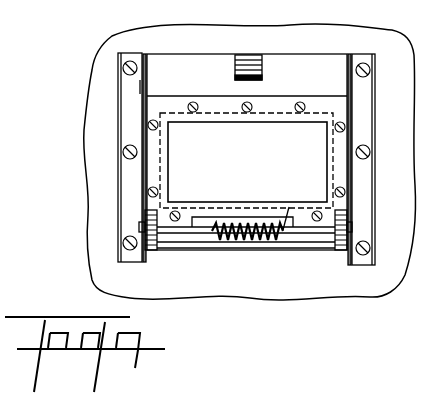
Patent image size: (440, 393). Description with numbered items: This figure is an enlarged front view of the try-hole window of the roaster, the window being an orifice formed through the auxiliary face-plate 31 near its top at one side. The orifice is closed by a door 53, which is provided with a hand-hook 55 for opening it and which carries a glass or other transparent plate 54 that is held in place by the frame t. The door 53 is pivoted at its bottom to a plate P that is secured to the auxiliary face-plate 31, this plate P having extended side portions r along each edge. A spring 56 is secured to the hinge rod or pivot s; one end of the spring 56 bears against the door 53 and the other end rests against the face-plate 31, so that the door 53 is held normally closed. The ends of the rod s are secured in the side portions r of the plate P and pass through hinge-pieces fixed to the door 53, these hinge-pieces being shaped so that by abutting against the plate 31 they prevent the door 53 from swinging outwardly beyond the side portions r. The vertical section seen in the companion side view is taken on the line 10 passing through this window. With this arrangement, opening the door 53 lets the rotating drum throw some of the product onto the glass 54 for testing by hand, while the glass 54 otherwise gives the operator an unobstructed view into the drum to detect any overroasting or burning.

The section line 10 is at (300, 13).
The auxiliary face-plate 31 is at (245, 246).
The door 53 is at (247, 152).
The glass plate 54 is at (246, 160).
The hand-hook 55 is at (262, 64).
The spring 56 is at (208, 225).
The plate P is at (383, 113).
The side portions r is at (140, 87).
The pivot rod s is at (180, 232).
The frame t is at (246, 159).